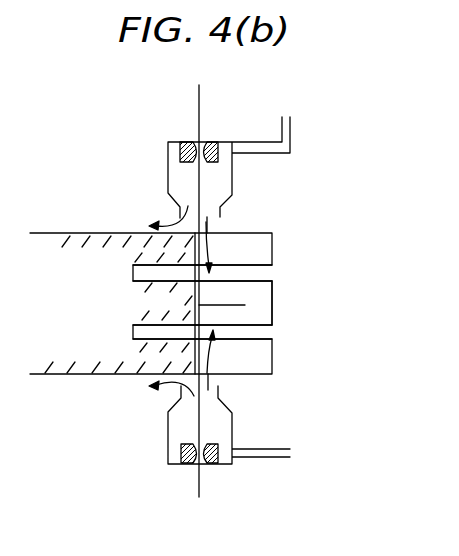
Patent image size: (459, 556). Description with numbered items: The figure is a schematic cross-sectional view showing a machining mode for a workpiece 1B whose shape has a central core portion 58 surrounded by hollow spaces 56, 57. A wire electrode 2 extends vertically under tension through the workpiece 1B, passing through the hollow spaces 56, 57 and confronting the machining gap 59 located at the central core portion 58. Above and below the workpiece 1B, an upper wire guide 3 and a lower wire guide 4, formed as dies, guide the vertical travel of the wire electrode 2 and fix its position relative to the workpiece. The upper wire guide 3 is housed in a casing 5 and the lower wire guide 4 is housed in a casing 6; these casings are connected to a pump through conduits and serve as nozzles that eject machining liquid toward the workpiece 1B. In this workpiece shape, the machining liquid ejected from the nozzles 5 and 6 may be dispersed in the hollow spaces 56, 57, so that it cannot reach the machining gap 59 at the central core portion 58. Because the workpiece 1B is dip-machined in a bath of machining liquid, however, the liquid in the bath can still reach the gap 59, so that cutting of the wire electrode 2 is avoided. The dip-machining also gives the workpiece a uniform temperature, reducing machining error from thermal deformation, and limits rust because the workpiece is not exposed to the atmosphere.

The wire electrode 2 is at (197, 119).
The upper wire guide 3 is at (207, 142).
The lower wire guide 4 is at (207, 463).
The casing 5 is at (220, 213).
The casing 6 is at (218, 395).
The workpiece 1B is at (95, 260).
The hollow space 56 is at (265, 272).
The hollow space 57 is at (272, 331).
The central core portion 58 is at (263, 299).
The machining gap 59 is at (245, 305).